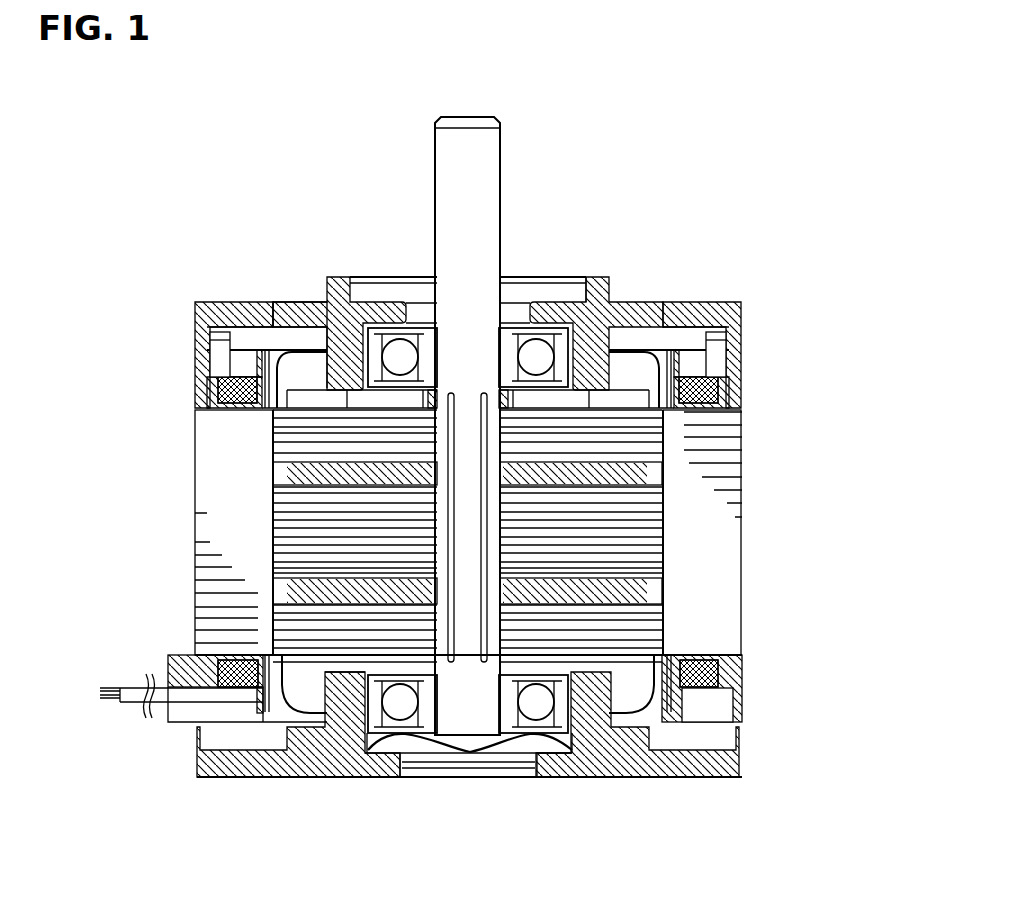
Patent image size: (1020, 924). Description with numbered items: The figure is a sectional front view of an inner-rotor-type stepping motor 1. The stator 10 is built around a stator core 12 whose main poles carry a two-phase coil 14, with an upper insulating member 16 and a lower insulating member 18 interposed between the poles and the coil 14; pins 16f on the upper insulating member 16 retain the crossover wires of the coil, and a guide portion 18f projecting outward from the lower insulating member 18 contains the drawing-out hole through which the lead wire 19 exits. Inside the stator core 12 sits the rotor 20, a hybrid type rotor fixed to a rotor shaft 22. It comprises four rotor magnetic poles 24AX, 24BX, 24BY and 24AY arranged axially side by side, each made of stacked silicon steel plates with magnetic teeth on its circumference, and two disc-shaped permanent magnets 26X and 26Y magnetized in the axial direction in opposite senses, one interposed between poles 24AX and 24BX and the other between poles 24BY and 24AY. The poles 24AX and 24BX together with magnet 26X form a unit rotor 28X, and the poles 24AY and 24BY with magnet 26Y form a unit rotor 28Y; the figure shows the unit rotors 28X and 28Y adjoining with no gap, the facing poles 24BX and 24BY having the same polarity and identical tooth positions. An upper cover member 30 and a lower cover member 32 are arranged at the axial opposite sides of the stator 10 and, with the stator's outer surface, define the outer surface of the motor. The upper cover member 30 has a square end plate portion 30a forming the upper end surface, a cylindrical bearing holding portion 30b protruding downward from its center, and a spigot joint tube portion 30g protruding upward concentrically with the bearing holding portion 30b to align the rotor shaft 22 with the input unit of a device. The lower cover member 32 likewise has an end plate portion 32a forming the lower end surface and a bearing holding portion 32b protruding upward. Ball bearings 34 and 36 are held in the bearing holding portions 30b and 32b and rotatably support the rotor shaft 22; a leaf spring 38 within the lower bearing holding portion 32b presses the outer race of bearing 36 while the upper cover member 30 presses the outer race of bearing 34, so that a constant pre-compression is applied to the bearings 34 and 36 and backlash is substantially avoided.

The motor 1 is at (96, 123).
The stator 10 is at (752, 507).
The stator core 12 is at (202, 515).
The two-phase coil 14 is at (222, 385).
The upper insulating member 16 is at (743, 392).
The pins 16f is at (733, 350).
The lower insulating member 18 is at (743, 678).
The guide portion 18f is at (185, 655).
The lead wire 19 is at (193, 698).
The rotor 20 is at (320, 398).
The rotor shaft 22 is at (493, 215).
The rotor magnetic pole 24AX is at (282, 433).
The rotor magnetic pole 24BX is at (282, 503).
The rotor magnetic pole 24AY is at (653, 627).
The rotor magnetic pole 24BY is at (650, 553).
The permanent magnet 26X is at (648, 473).
The permanent magnet 26Y is at (297, 593).
The unit rotor 28X is at (620, 407).
The unit rotor 28Y is at (622, 672).
The upper cover member 30 is at (700, 302).
The end plate portion 30a is at (233, 303).
The bearing holding portion 30b is at (345, 363).
The spigot joint tube portion 30g is at (586, 282).
The lower cover member 32 is at (688, 773).
The end plate portion 32a is at (592, 763).
The bearing holding portion 32b is at (330, 673).
The bearing 34 is at (400, 348).
The bearing 36 is at (385, 700).
The leaf spring 38 is at (433, 745).